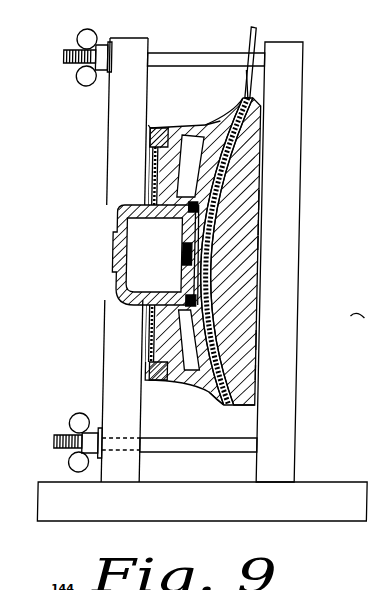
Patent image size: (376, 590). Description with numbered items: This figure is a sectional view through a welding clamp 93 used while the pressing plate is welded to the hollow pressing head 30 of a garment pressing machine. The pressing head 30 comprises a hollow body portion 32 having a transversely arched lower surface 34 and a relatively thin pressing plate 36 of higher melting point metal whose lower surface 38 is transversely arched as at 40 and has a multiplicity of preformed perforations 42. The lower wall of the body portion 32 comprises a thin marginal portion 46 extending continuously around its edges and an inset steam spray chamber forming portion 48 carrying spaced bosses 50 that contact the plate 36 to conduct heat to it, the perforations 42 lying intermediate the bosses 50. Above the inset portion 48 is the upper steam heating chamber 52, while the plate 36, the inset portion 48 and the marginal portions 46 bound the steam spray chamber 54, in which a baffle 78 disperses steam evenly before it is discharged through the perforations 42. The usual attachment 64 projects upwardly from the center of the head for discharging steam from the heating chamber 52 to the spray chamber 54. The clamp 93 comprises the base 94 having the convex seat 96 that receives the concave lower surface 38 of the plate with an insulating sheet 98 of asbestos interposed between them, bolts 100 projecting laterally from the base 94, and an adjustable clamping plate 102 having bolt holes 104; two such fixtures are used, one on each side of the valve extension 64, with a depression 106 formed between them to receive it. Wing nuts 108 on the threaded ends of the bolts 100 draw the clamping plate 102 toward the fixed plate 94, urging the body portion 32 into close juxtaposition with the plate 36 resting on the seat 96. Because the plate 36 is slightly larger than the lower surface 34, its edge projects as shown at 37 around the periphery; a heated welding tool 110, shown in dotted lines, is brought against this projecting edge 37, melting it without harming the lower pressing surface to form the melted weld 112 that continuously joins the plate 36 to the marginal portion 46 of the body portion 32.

The hollow pressing head 30 is at (184, 120).
The hollow body portion 32 is at (150, 125).
The lower surface 34 is at (222, 128).
The pressing plate 36 is at (252, 403).
The projecting edge 37 is at (247, 70).
The lower surface of pressing plate 38 is at (254, 378).
The transversely arched portion 40 is at (254, 258).
The perforations 42 is at (250, 292).
The marginal portion 46 is at (213, 396).
The steam spray chamber forming portion 48 is at (254, 348).
The bosses 50 is at (255, 160).
The steam heating chamber 52 is at (197, 136).
The steam spray chamber 54 is at (253, 202).
The attachment 64 is at (118, 287).
The baffle 78 is at (186, 244).
The welding clamp 93 is at (326, 475).
The base 94 is at (299, 63).
The convex seat 96 is at (250, 230).
The insulating sheet 98 is at (250, 246).
The bolts 100 is at (185, 55).
The adjustable clamping plate 102 is at (112, 368).
The bolt holes 104 is at (121, 440).
The depression 106 is at (124, 214).
The wing nuts 108 is at (84, 32).
The welding tool 110 is at (256, 33).
The melted weld 112 is at (246, 100).